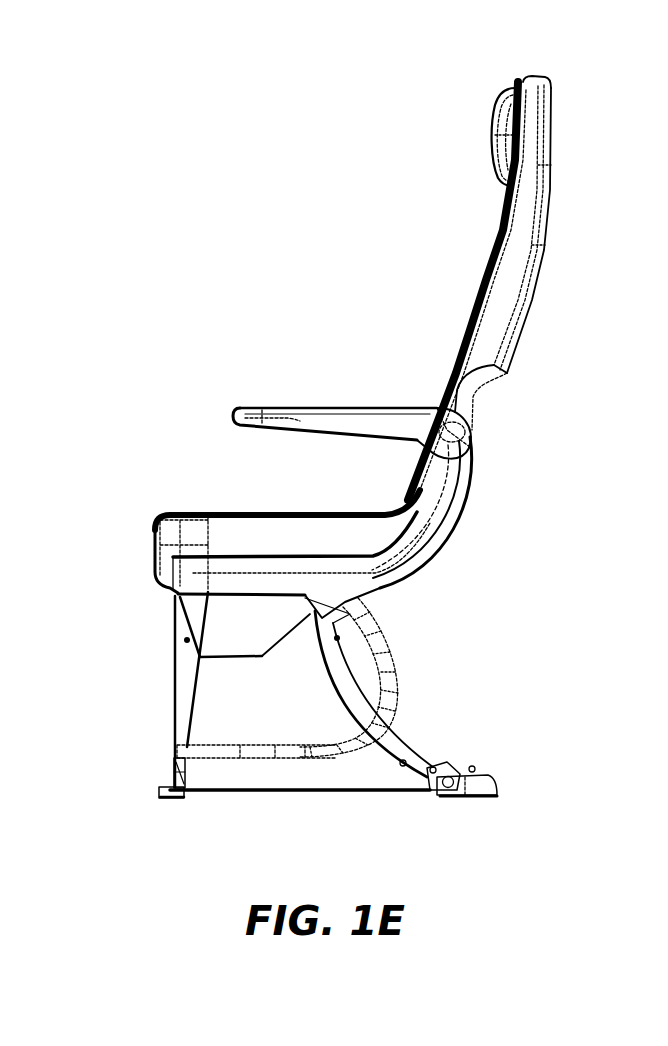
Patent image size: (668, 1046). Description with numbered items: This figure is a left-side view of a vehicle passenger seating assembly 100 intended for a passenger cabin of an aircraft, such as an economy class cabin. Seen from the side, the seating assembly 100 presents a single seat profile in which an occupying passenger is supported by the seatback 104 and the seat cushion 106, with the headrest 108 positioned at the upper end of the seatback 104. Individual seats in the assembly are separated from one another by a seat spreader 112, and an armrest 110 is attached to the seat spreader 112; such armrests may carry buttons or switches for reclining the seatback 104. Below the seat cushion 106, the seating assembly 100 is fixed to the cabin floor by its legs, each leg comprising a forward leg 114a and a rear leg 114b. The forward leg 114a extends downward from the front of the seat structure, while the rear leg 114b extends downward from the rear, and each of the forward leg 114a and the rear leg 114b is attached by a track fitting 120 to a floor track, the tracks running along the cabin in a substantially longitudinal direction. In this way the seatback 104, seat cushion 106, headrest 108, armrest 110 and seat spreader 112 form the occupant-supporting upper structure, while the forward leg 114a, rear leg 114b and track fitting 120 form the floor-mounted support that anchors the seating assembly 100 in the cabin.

The passenger seating assembly 100 is at (108, 136).
The seatback 104 is at (503, 307).
The seat cushion 106 is at (247, 535).
The headrest 108 is at (493, 138).
The armrest 110 is at (377, 423).
The seat spreader 112 is at (417, 525).
The forward leg 114a is at (188, 680).
The rear leg 114b is at (398, 743).
The track fitting 120 is at (160, 785).